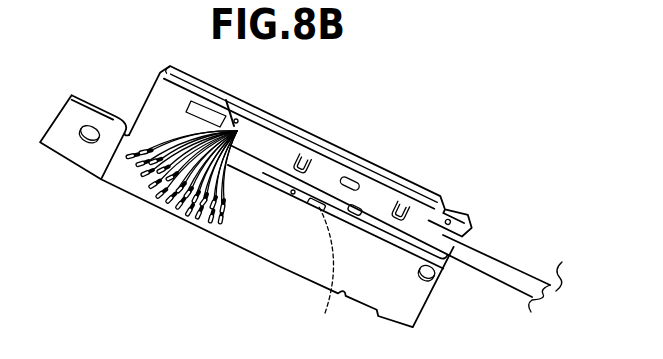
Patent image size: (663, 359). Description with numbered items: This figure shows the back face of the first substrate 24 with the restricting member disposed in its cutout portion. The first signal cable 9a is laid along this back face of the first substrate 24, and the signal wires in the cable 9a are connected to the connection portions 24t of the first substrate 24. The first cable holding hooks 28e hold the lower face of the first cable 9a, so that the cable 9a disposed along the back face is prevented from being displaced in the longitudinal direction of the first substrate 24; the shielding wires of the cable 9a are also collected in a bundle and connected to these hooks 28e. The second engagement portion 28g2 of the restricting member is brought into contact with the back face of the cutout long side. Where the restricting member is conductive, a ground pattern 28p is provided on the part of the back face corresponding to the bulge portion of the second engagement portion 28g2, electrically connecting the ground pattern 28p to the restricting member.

The first signal cable 9a is at (515, 277).
The first substrate 24 is at (252, 220).
The connection portions 24t is at (134, 170).
The first cable holding hooks 28e is at (404, 206).
The second engagement portion 28g2 is at (310, 205).
The ground pattern 28p is at (331, 270).